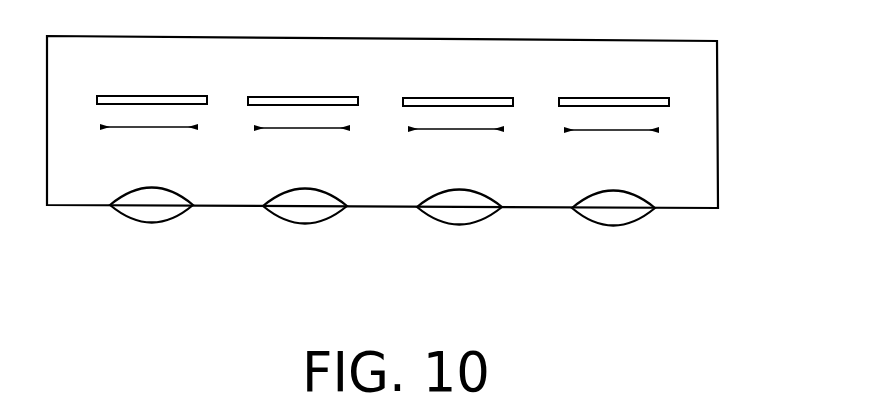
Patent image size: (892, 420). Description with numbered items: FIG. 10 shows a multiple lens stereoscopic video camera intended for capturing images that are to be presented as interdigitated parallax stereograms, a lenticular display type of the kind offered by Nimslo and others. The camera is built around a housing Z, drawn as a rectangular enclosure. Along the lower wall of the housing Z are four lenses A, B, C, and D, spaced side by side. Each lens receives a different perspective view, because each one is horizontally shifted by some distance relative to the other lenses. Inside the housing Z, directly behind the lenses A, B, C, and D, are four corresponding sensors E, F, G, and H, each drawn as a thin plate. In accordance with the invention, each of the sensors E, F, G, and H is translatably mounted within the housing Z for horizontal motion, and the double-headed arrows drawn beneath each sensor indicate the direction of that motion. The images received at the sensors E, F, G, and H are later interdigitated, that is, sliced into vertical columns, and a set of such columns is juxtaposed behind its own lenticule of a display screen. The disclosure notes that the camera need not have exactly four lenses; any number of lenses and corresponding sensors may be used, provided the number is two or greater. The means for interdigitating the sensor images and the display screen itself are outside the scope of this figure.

The housing Z is at (718, 130).
The sensor E is at (147, 96).
The sensor F is at (310, 97).
The sensor G is at (462, 98).
The sensor H is at (610, 98).
The lens A is at (150, 224).
The lens B is at (298, 225).
The lens C is at (458, 226).
The lens D is at (620, 227).